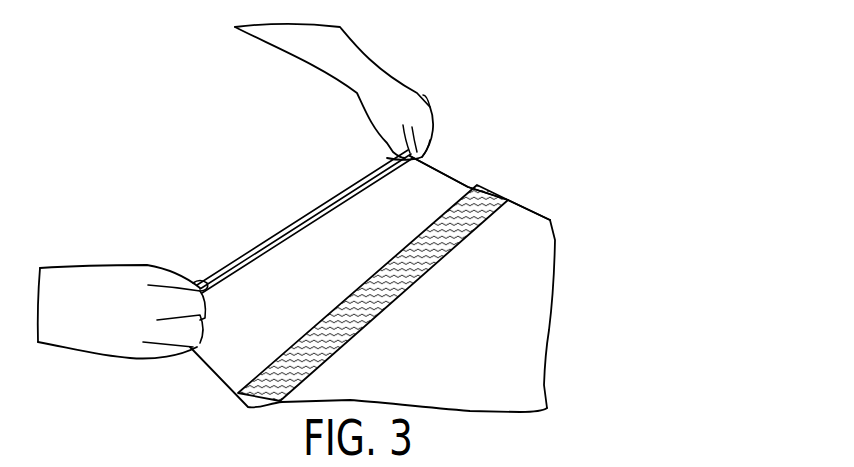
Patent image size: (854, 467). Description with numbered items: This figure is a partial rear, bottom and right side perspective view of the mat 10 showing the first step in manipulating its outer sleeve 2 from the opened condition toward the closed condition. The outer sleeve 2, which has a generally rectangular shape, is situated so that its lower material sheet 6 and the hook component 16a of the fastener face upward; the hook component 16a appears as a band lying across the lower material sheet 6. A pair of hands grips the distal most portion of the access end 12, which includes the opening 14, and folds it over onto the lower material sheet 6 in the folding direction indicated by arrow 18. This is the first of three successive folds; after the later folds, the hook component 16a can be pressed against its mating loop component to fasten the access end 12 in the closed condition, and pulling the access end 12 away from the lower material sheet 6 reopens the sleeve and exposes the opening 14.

The mat 10 is at (477, 222).
The outer sleeve 2 is at (393, 222).
The lower material sheet 6 is at (533, 335).
The access end 12 is at (503, 100).
The opening 14 is at (270, 250).
The hook component 16a is at (491, 197).
The folding direction 18 is at (210, 123).